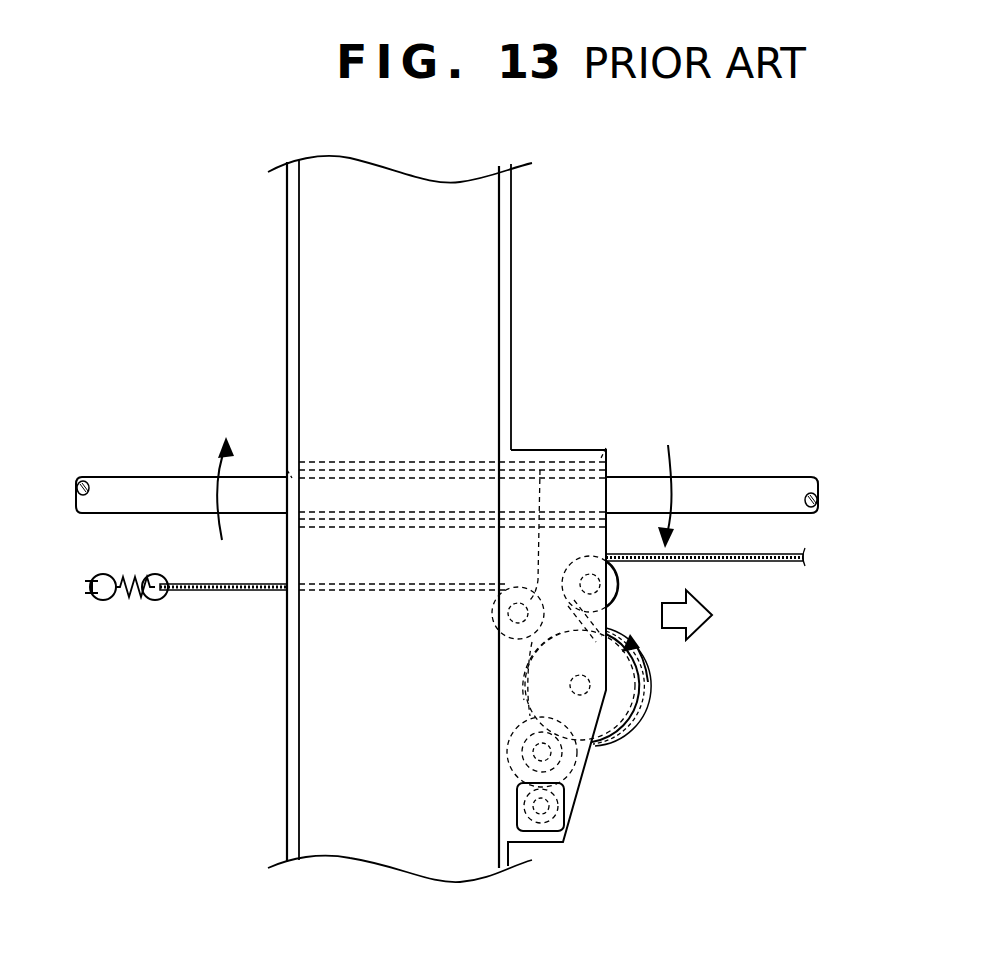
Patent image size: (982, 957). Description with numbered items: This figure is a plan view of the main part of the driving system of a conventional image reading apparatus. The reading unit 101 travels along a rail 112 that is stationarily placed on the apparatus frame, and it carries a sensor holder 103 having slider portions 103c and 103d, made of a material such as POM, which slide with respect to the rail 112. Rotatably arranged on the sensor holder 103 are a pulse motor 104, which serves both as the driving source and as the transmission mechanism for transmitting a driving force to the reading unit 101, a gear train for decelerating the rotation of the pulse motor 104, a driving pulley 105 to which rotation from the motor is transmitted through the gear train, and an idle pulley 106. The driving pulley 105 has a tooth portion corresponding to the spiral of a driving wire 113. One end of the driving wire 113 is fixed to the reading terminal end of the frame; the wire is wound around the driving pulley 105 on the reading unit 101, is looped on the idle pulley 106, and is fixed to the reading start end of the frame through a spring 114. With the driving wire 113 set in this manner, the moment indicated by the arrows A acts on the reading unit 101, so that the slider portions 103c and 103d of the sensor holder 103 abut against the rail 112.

The reading unit 101 is at (312, 777).
The sensor holder 103 is at (508, 812).
The slider portion 103c is at (287, 470).
The slider portion 103d is at (606, 448).
The pulse motor 104 is at (567, 818).
The driving pulley 105 is at (618, 710).
The idle pulley 106 is at (540, 470).
The rail 112 is at (148, 492).
The driving wire 113 is at (745, 565).
The spring 114 is at (125, 600).